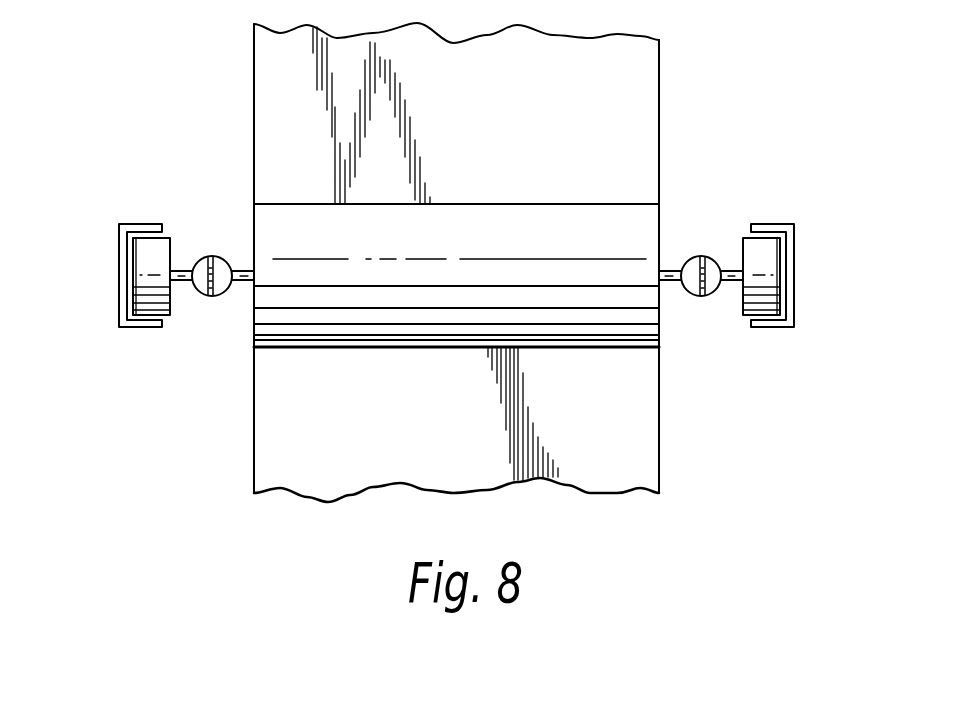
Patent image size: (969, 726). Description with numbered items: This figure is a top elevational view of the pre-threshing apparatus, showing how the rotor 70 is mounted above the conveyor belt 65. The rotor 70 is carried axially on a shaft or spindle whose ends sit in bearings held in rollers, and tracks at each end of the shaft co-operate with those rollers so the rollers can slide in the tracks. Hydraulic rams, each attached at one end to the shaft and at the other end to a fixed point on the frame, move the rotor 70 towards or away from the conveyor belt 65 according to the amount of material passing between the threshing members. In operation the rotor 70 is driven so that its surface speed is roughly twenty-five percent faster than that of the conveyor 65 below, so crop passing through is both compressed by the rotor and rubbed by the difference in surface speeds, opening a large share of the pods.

The conveyor belt 65 is at (638, 89).
The rotor 70 is at (549, 228).